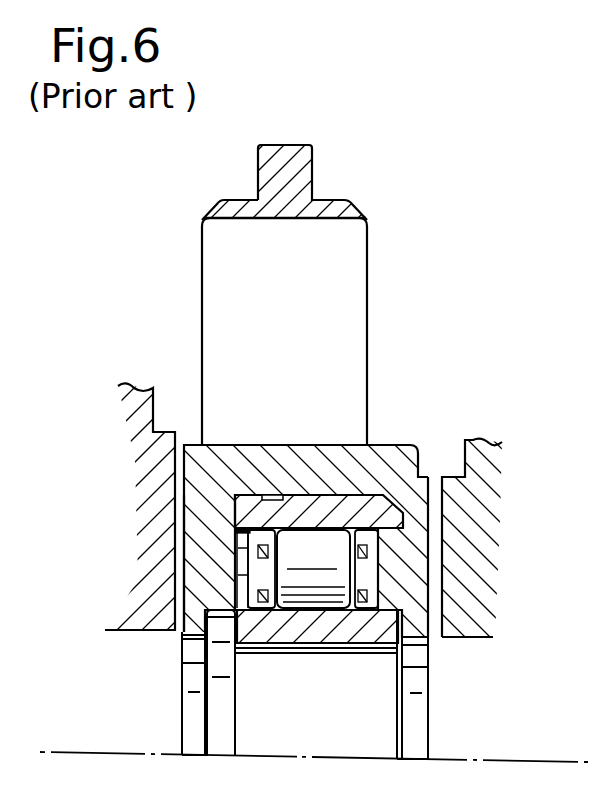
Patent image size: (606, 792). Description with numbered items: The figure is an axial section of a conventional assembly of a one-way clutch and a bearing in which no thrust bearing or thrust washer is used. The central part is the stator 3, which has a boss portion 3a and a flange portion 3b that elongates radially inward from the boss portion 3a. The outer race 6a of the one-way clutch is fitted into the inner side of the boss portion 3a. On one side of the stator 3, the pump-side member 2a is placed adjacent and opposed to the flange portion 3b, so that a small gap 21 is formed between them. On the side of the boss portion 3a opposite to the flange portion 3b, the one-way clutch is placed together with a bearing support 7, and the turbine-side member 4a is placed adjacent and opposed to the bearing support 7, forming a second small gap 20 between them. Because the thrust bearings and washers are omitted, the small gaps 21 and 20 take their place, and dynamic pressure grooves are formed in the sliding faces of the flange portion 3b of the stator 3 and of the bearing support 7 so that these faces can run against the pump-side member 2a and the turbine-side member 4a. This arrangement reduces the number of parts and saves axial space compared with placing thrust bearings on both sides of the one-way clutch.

The stator 3 is at (348, 206).
The pump-side member 2a is at (150, 458).
The boss portion 3a is at (392, 452).
The flange portion 3b is at (207, 555).
The turbine-side member 4a is at (493, 467).
The outer race 6a is at (302, 503).
The bearing support 7 is at (442, 583).
The small gap 20 is at (432, 623).
The small gap 21 is at (178, 615).